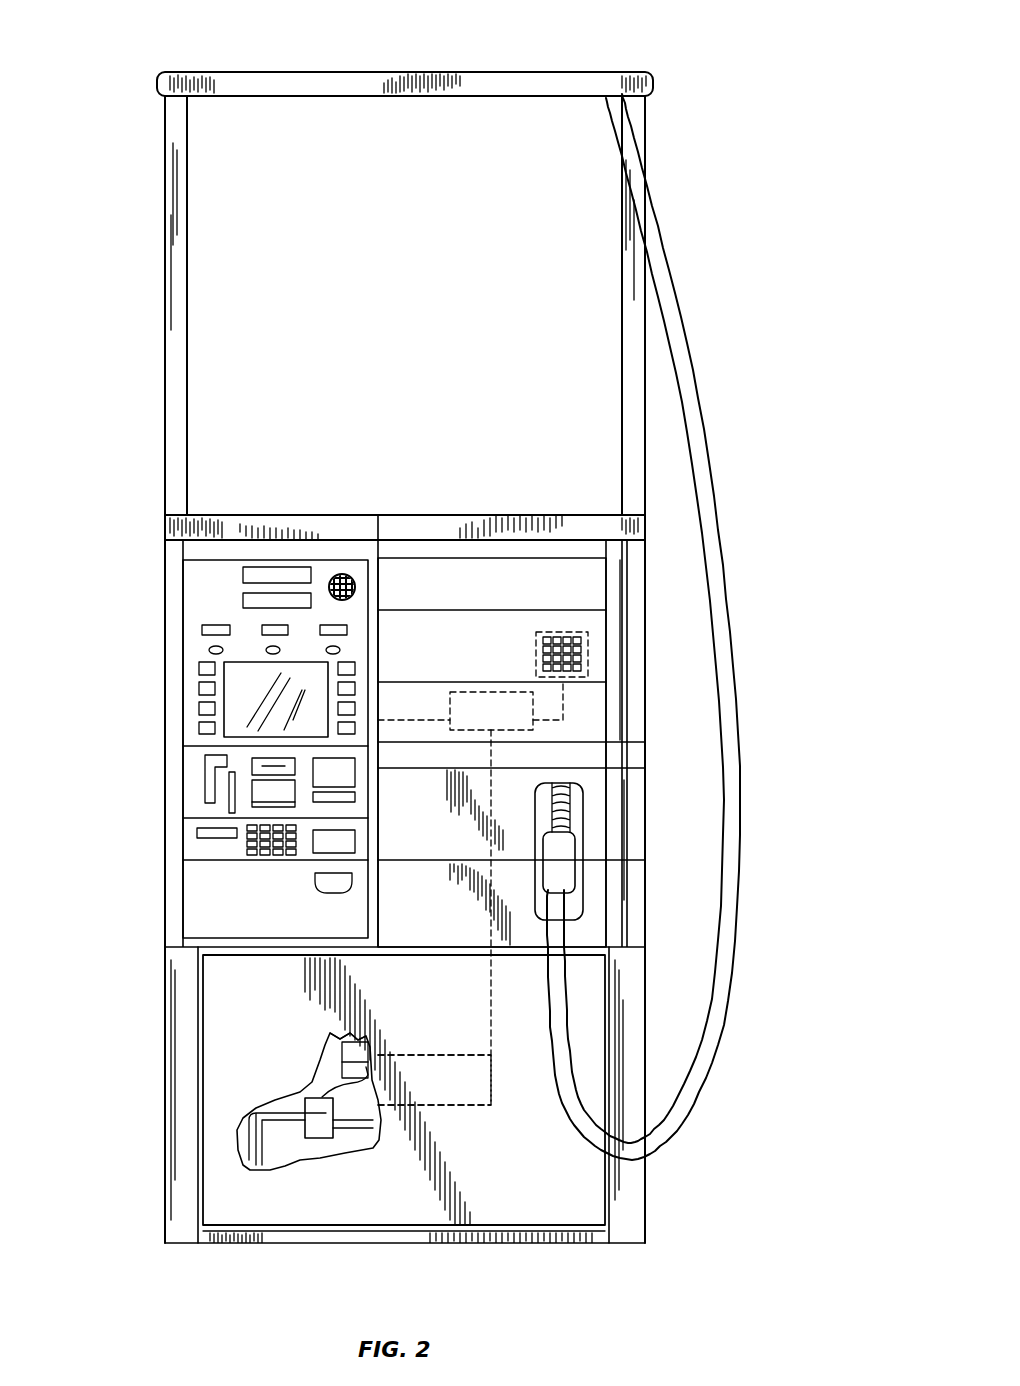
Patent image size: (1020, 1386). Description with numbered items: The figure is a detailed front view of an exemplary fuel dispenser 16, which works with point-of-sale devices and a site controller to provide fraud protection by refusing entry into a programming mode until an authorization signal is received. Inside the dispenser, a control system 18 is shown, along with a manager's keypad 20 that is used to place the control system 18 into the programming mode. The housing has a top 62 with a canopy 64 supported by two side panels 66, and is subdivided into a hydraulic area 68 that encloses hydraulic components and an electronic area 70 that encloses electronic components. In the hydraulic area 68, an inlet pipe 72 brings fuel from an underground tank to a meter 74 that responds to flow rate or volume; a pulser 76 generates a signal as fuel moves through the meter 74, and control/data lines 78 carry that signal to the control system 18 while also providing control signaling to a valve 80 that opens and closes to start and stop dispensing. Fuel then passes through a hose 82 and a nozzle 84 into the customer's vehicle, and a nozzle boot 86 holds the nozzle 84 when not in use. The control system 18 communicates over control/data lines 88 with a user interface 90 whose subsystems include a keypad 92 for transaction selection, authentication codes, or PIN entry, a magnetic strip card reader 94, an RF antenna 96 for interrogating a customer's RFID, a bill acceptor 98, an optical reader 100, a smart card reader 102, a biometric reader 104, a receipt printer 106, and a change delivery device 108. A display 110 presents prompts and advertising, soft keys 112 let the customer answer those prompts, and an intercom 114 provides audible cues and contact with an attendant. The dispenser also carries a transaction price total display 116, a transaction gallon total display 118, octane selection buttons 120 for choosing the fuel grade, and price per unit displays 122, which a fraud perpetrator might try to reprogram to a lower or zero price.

The fuel dispenser 16 is at (670, 54).
The control system 18 is at (512, 718).
The manager's keypad 20 is at (588, 640).
The top 62 is at (466, 515).
The canopy 64 is at (487, 72).
The side panels 66 is at (165, 335).
The hydraulic area 68 is at (571, 1202).
The electronic area 70 is at (576, 597).
The inlet pipe 72 is at (248, 1136).
The meter 74 is at (342, 1068).
The pulser 76 is at (337, 1040).
The control/data lines 78 is at (491, 1012).
The valve 80 is at (318, 1138).
The hose 82 is at (722, 745).
The nozzle 84 is at (563, 857).
The nozzle boot 86 is at (578, 903).
The control/data lines 88 is at (420, 720).
The user interface 90 is at (128, 668).
The keypad 92 is at (248, 848).
The magnetic strip card reader 94 is at (210, 772).
The RF antenna 96 is at (337, 770).
The bill acceptor 98 is at (262, 760).
The optical reader 100 is at (284, 792).
The smart card reader 102 is at (352, 838).
The biometric reader 104 is at (340, 800).
The receipt printer 106 is at (217, 830).
The change delivery device 108 is at (350, 886).
The display 110 is at (247, 680).
The soft keys 112 is at (200, 707).
The intercom 114 is at (344, 574).
The transaction price total display 116 is at (243, 574).
The transaction gallon total display 118 is at (243, 600).
The octane selection buttons 120 is at (347, 625).
The price per unit displays 122 is at (338, 648).